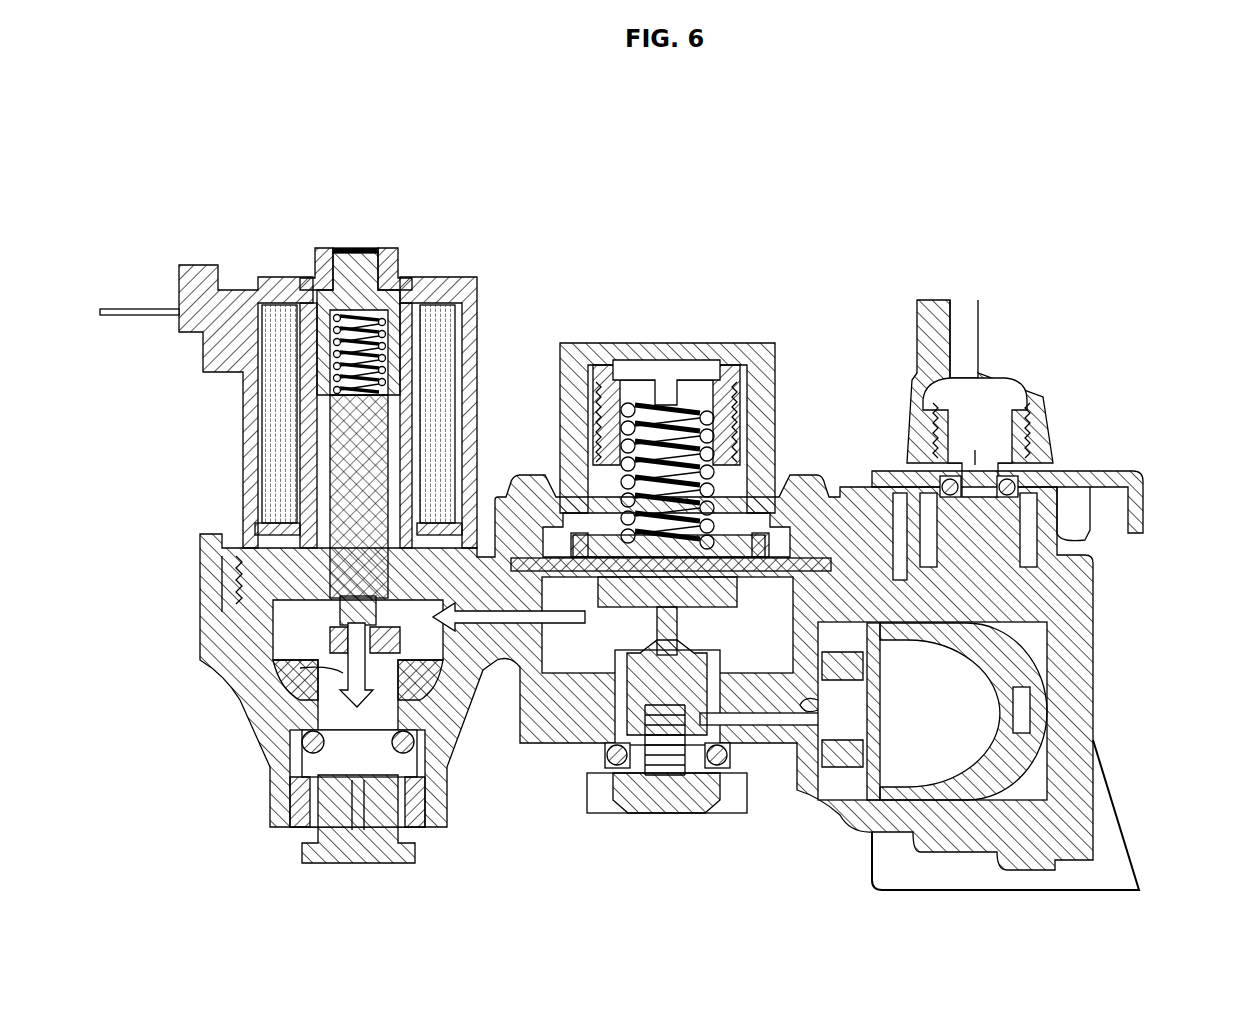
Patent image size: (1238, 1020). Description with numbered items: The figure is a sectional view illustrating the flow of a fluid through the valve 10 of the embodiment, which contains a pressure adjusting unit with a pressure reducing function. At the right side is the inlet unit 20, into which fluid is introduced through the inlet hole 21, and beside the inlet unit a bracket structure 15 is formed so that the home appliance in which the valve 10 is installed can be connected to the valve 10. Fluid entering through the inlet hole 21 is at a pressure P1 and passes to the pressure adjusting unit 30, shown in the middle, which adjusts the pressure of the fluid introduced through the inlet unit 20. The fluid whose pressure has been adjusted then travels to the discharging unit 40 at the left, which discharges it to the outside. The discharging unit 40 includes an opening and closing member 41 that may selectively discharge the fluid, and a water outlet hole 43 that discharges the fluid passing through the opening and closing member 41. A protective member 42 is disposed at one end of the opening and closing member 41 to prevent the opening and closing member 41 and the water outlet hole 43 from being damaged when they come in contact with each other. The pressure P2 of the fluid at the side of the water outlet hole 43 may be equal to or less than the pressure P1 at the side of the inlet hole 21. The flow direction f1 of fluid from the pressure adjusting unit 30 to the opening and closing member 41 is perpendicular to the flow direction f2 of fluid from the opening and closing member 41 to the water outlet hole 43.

The valve 10 is at (143, 110).
The bracket structure 15 is at (1105, 840).
The inlet unit 20 is at (1007, 360).
The inlet hole 21 is at (1010, 492).
The pressure adjusting unit 30 is at (680, 316).
The discharging unit 40 is at (288, 497).
The opening and closing member 41 is at (345, 452).
The protective member 42 is at (318, 628).
The water outlet hole 43 is at (330, 672).
The pressure of a fluid at a side of the inlet hole P1 is at (978, 472).
The pressure of a fluid at a side of the water outlet hole P2 is at (348, 672).
The flow direction of a fluid from the pressure adjusting unit to the opening and cl f1 is at (487, 623).
The flow direction of a fluid from the opening and closing member to the water outle f2 is at (360, 708).